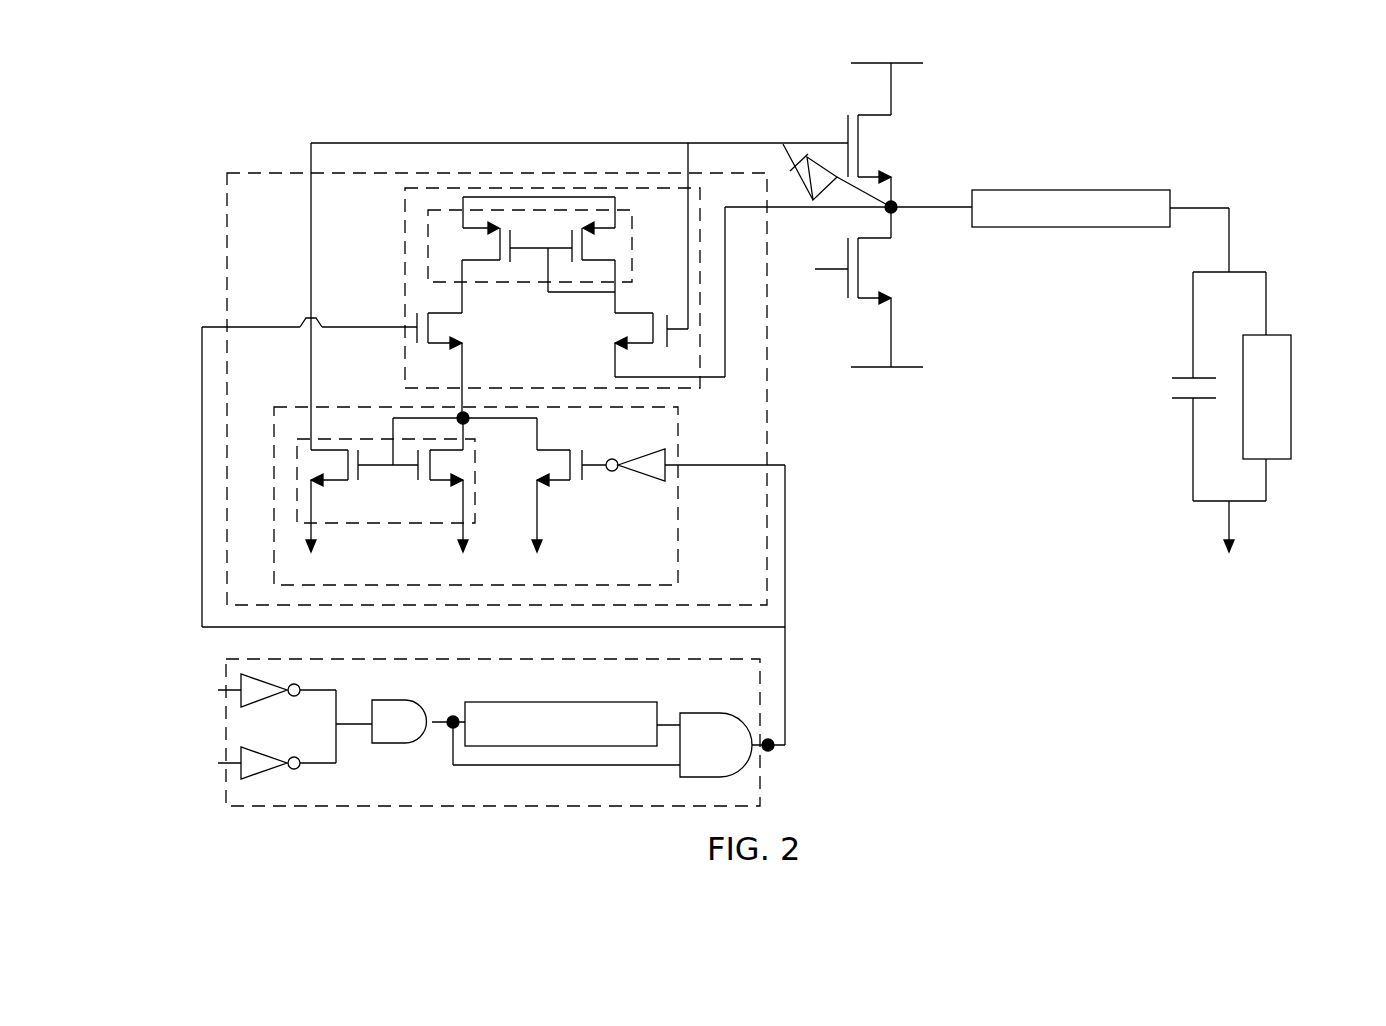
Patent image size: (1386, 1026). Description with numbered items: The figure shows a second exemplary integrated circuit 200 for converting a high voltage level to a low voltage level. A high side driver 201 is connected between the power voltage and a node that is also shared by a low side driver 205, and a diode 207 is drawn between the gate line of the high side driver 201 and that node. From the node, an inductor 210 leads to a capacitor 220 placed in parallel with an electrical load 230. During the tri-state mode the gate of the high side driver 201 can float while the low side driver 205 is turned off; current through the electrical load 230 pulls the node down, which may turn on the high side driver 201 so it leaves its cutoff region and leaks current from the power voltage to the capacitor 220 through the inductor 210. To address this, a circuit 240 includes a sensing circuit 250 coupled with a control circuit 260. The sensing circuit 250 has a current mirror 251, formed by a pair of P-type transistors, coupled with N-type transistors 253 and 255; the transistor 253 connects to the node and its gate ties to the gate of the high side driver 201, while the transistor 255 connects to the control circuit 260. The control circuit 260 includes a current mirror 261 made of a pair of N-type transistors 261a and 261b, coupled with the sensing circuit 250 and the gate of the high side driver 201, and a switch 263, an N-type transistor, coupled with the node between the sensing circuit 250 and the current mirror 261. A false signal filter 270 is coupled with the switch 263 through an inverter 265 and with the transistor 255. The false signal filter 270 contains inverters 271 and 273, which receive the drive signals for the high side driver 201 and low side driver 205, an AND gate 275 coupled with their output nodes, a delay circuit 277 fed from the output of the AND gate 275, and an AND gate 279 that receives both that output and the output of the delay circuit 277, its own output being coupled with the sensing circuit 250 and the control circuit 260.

The integrated circuit 200 is at (1163, 139).
The high side driver 201 is at (905, 146).
The low side driver 205 is at (905, 276).
The diode 207 is at (803, 190).
The inductor 210 is at (1119, 393).
The capacitor 220 is at (1150, 383).
The electrical load 230 is at (1291, 388).
The circuit 240 is at (768, 442).
The sensing circuit 250 is at (405, 237).
The current mirror 251 is at (634, 219).
The transistor 253 is at (621, 334).
The transistor 255 is at (464, 333).
The control circuit 260 is at (322, 407).
The current mirror 261 is at (357, 523).
The N-type transistor 261a is at (444, 491).
The N-type transistor 261b is at (322, 495).
The switch 263 is at (545, 468).
The inverter 265 is at (643, 484).
The false signal filter 270 is at (765, 805).
The inverter 271 is at (255, 707).
The inverter 273 is at (255, 779).
The AND gate 275 is at (385, 745).
The delay circuit 277 is at (561, 724).
The AND gate 279 is at (693, 778).